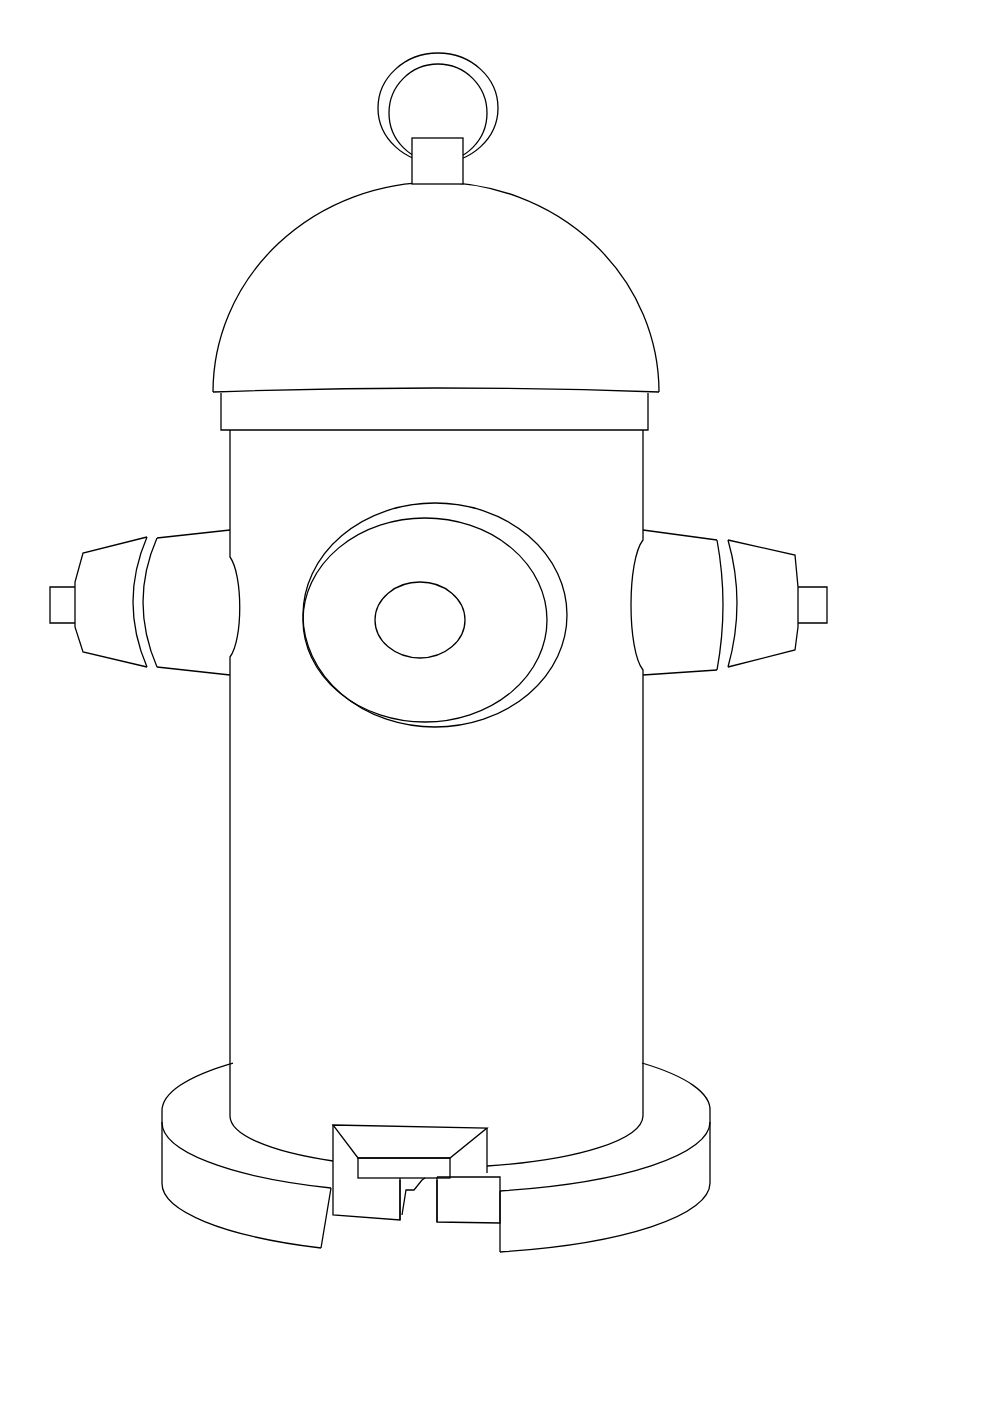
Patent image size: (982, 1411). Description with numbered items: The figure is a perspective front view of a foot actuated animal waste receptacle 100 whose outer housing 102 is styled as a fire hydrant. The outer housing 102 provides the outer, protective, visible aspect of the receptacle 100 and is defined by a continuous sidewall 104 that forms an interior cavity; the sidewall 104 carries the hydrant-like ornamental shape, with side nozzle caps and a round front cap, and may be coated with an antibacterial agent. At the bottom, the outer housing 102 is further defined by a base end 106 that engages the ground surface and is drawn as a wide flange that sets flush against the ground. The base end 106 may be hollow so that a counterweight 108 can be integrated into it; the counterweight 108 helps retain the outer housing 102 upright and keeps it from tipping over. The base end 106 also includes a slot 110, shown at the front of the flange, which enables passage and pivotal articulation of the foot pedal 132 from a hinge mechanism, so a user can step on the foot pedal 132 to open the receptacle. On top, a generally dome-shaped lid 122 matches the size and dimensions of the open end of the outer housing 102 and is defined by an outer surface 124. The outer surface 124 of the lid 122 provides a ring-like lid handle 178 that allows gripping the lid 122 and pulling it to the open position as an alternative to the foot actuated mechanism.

The receptacle 100 is at (152, 185).
The outer housing 102 is at (273, 900).
The continuous sidewall 104 is at (459, 925).
The base end 106 is at (708, 1140).
The counterweight 108 is at (358, 1213).
The slot 110 is at (428, 1186).
The lid 122 is at (528, 237).
The outer surface 124 is at (455, 333).
The foot pedal 132 is at (430, 1150).
The lid handle 178 is at (458, 62).